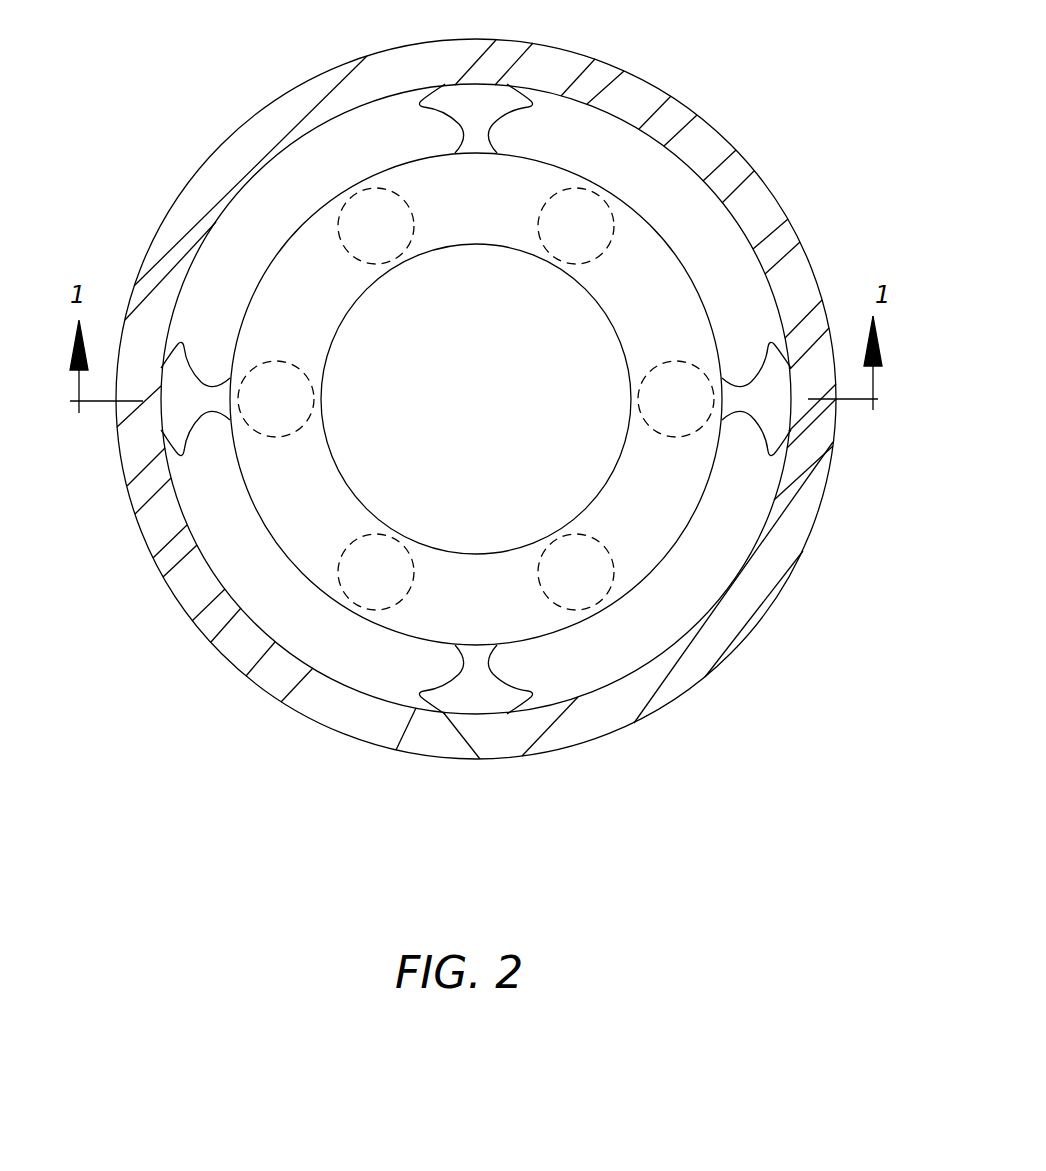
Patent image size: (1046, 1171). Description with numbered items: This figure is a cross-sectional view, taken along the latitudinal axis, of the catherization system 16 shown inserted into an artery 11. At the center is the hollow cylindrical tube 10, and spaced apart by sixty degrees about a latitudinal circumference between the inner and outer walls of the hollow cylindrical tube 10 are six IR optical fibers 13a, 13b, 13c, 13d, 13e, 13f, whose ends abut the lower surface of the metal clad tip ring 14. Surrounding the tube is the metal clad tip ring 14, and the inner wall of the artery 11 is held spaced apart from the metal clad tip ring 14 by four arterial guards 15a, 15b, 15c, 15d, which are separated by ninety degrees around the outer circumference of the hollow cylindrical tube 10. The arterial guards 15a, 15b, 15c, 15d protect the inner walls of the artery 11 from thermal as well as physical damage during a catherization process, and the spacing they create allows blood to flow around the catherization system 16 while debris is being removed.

The hollow cylindrical tube 10 is at (482, 406).
The artery 11 is at (700, 682).
The IR optical fiber 13a is at (285, 407).
The IR optical fiber 13b is at (675, 397).
The IR optical fiber 13c is at (392, 565).
The IR optical fiber 13d is at (574, 235).
The IR optical fiber 13e is at (383, 235).
The IR optical fiber 13f is at (585, 565).
The metal clad tip ring 14 is at (300, 505).
The arterial guard 15a is at (187, 405).
The arterial guard 15b is at (773, 424).
The arterial guard 15c is at (466, 112).
The arterial guard 15d is at (487, 703).
The catherization system 16 is at (680, 205).